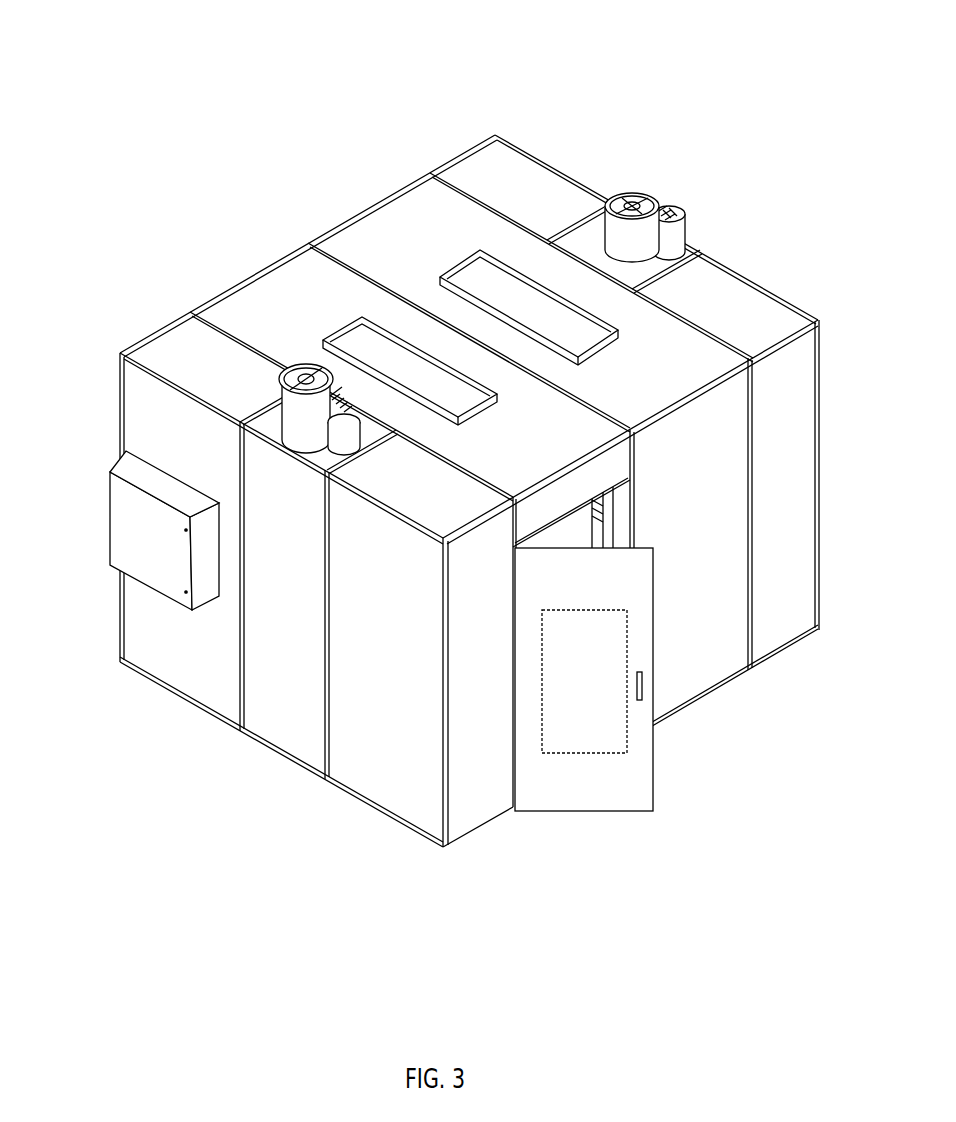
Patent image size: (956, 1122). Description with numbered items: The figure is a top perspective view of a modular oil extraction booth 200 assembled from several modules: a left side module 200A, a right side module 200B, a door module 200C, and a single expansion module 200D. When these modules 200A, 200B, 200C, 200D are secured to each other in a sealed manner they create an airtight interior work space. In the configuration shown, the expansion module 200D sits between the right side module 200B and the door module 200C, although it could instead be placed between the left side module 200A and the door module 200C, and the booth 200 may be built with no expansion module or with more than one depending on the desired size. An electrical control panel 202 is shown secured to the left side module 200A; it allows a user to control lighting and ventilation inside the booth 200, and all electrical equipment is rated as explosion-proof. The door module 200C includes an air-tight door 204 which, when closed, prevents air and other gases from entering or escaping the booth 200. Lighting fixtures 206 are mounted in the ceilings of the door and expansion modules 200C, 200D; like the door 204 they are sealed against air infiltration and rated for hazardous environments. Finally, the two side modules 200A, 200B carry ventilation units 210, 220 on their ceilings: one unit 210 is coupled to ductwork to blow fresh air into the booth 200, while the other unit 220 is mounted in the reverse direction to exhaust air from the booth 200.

The oil extraction booth 200 is at (217, 110).
The left side module 200A is at (400, 822).
The right side module 200B is at (520, 143).
The door module 200C is at (242, 282).
The expansion module 200D is at (720, 685).
The electrical control panel 202 is at (145, 547).
The air-tight door 204 is at (612, 810).
The lighting fixtures 206 is at (463, 270).
The ventilation unit 210 is at (287, 413).
The ventilation unit 220 is at (647, 192).